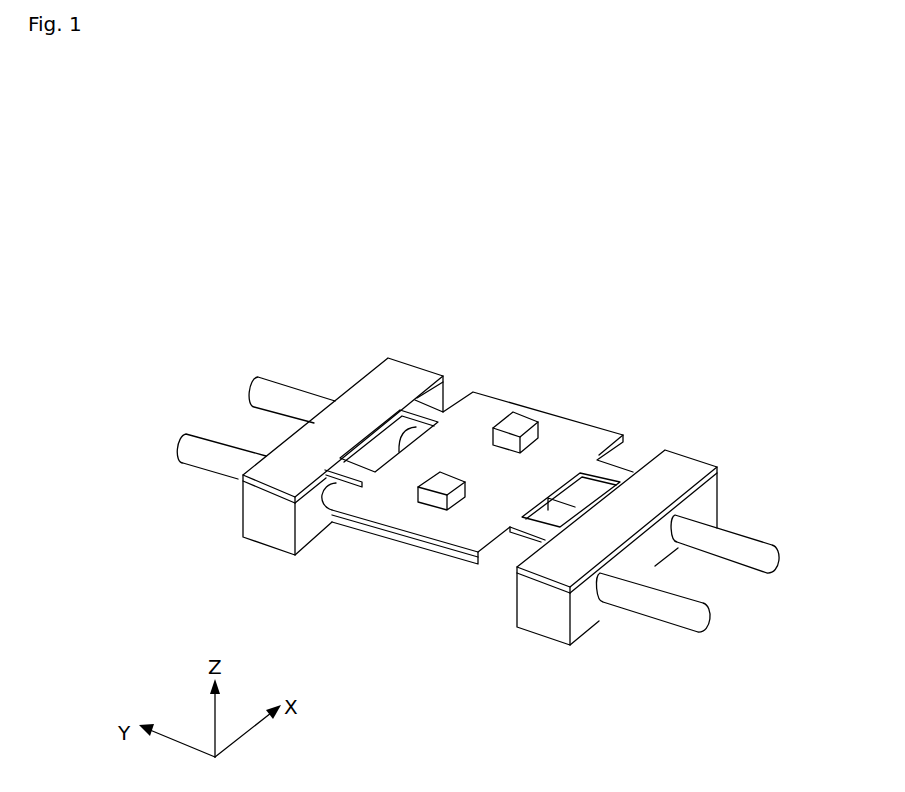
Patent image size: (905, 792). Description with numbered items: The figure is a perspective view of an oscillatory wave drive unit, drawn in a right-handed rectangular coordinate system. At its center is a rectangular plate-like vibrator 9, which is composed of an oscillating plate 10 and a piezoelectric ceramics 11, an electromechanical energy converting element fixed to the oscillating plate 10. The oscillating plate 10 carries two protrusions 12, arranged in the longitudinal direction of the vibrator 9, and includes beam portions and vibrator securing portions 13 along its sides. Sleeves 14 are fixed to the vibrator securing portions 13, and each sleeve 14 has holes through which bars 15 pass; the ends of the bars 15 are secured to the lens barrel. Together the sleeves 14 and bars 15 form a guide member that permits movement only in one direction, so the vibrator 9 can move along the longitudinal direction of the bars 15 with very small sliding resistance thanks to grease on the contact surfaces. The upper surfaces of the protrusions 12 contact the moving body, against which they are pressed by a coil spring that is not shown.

The vibrator 9 is at (593, 437).
The oscillating plate 10 is at (550, 423).
The piezoelectric ceramics 11 is at (397, 535).
The protrusions 12 is at (443, 482).
The vibrator securing portions 13 is at (376, 387).
The sleeves 14 is at (270, 519).
The bars 15 is at (712, 614).